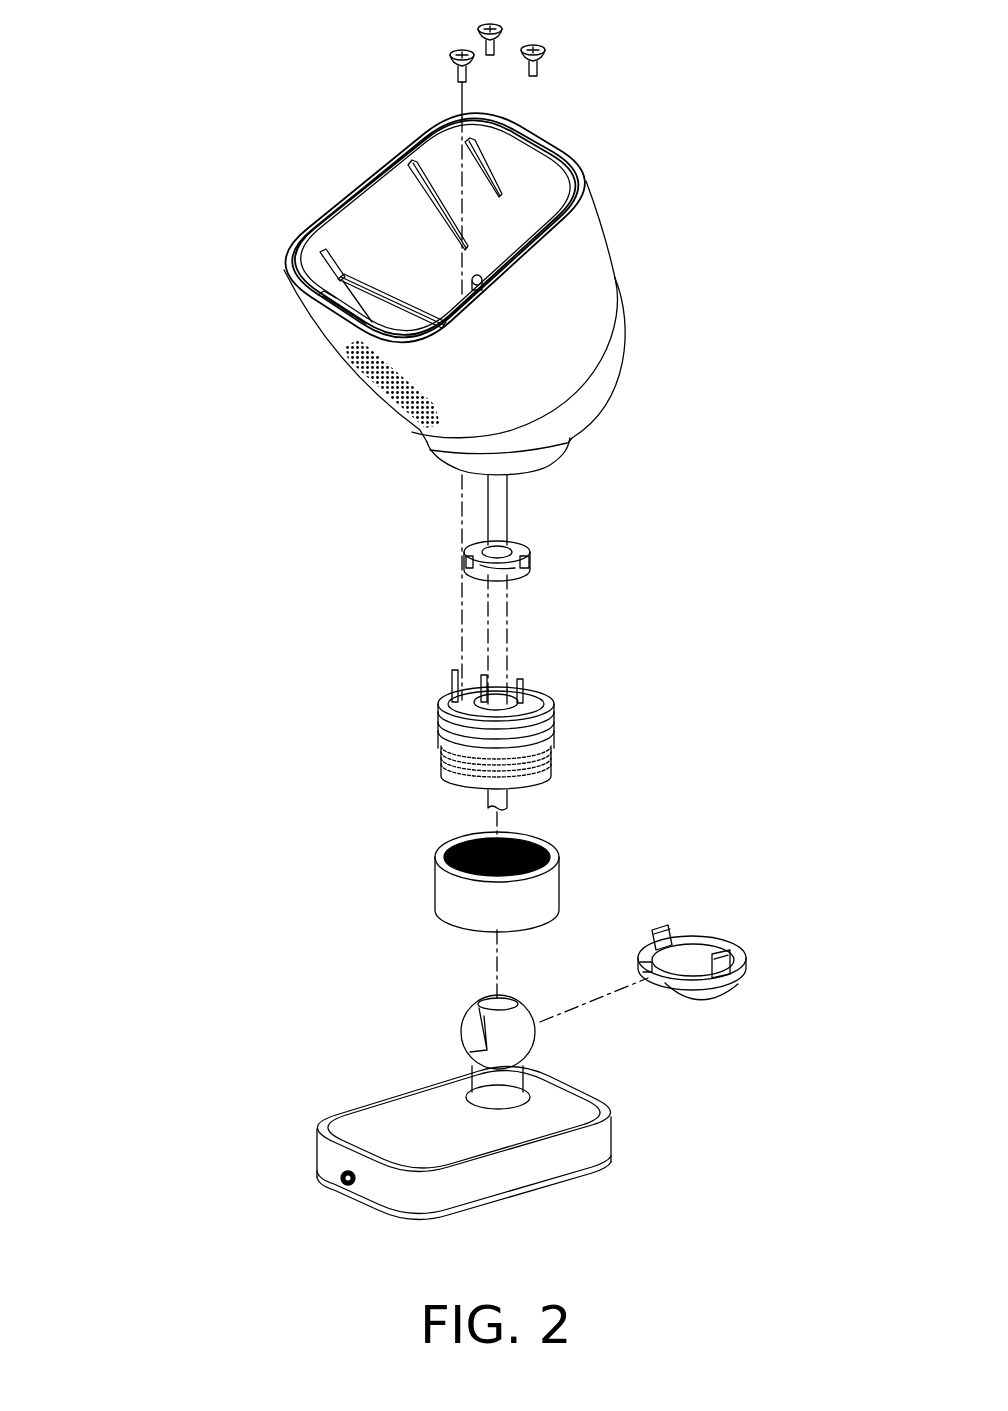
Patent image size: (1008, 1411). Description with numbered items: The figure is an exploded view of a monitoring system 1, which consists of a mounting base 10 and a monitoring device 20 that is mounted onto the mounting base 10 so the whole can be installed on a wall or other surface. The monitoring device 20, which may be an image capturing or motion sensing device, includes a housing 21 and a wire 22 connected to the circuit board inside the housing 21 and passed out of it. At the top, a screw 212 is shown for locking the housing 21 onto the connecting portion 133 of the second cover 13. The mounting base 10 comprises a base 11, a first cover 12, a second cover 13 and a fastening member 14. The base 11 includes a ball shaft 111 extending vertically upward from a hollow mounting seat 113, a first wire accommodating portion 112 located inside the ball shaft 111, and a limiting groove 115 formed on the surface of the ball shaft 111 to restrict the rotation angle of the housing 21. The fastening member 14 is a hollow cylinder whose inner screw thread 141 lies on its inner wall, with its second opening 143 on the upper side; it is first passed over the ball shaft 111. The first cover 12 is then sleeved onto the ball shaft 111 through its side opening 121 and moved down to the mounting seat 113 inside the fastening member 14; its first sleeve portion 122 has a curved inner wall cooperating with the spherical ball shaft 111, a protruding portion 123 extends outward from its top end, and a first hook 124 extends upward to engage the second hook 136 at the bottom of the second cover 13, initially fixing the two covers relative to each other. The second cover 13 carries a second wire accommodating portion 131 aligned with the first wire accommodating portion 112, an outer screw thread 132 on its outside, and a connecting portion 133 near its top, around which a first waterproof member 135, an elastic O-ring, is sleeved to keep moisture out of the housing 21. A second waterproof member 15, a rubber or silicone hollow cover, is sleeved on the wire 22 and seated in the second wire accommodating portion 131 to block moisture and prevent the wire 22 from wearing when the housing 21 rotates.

The monitoring system 1 is at (185, 118).
The mounting base 10 is at (300, 657).
The monitoring device 20 is at (272, 266).
The housing 21 is at (600, 287).
The screw 212 is at (540, 63).
The wire 22 is at (500, 512).
The second waterproof member 15 is at (470, 550).
The second cover 13 is at (557, 731).
The second wire accommodating portion 131 is at (512, 690).
The outer screw thread 132 is at (560, 752).
The connecting portion 133 is at (438, 730).
The first waterproof member 135 is at (442, 716).
The second hook 136 is at (537, 780).
The fastening member 14 is at (557, 882).
The inner screw thread 141 is at (548, 843).
The second opening 143 is at (450, 836).
The first cover 12 is at (745, 960).
The side opening 121 is at (640, 968).
The first sleeve portion 122 is at (725, 990).
The protruding portion 123 is at (718, 940).
The first hook 124 is at (664, 930).
The base 11 is at (395, 1105).
The ball shaft 111 is at (520, 1043).
The first wire accommodating portion 112 is at (490, 1000).
The mounting seat 113 is at (590, 1105).
The limiting groove 115 is at (470, 1036).